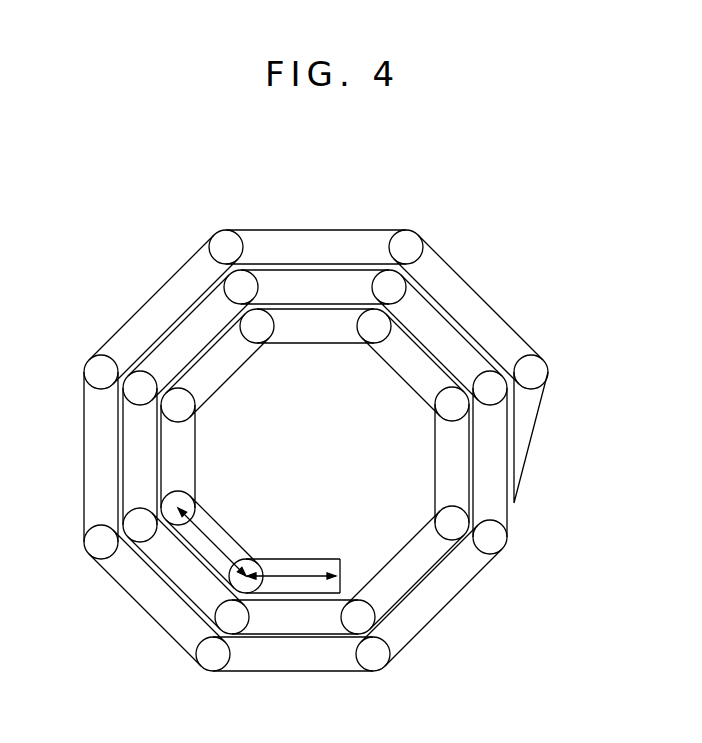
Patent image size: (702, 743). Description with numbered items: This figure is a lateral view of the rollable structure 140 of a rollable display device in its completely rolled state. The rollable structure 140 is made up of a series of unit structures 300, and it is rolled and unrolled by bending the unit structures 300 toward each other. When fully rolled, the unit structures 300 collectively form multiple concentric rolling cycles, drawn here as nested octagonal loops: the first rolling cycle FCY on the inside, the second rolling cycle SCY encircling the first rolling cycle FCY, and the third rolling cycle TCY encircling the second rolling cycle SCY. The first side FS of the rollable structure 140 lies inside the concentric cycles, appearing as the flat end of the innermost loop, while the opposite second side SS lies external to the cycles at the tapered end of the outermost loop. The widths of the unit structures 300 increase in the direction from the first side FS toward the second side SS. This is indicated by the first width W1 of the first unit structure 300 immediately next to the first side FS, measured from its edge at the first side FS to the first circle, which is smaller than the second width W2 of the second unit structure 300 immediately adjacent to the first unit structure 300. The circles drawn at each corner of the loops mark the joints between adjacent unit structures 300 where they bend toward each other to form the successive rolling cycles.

The rollable structure 140 is at (409, 210).
The unit structure 300 is at (482, 307).
The first rolling cycle FCY is at (287, 313).
The second rolling cycle SCY is at (330, 275).
The third rolling cycle TCY is at (375, 235).
The second side SS is at (517, 514).
The first side FS is at (342, 587).
The first width W1 is at (307, 570).
The second width W2 is at (217, 540).